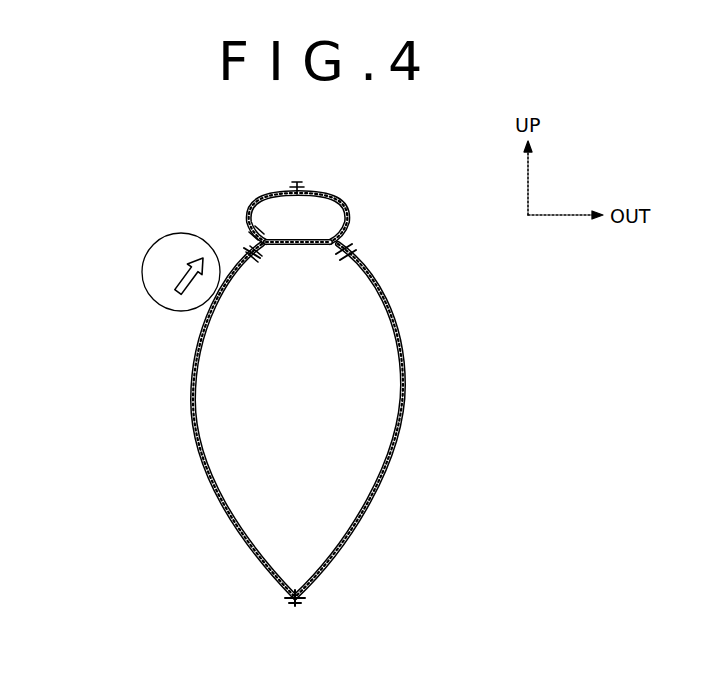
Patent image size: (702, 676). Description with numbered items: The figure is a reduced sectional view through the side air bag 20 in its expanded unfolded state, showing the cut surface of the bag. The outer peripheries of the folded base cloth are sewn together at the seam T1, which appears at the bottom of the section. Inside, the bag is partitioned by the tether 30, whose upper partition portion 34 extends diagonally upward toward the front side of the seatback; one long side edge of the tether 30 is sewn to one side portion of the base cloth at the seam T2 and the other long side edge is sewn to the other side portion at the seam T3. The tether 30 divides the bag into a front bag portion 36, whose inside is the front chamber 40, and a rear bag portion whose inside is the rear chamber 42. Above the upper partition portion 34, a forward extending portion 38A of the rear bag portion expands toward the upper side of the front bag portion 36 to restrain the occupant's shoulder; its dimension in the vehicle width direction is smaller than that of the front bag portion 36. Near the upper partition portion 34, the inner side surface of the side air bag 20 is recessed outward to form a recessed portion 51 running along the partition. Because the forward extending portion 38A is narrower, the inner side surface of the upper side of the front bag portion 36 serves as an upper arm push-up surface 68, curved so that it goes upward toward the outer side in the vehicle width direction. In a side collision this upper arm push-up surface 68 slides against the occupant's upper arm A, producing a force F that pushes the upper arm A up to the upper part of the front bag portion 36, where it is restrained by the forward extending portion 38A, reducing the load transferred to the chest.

The side air bag 20 is at (294, 420).
The front bag portion 36 is at (193, 426).
The front chamber 40 is at (310, 447).
The rear chamber 42 is at (308, 210).
The forward extending portion 38A is at (347, 191).
The upper partition portion 34 is at (293, 247).
The tether 30 is at (304, 280).
The recessed portion 51 is at (246, 233).
The upper arm push-up surface 68 is at (237, 262).
The seam T1 is at (300, 600).
The seam T2 is at (250, 262).
The seam T3 is at (350, 247).
The upper arm A is at (158, 242).
The force F is at (180, 271).